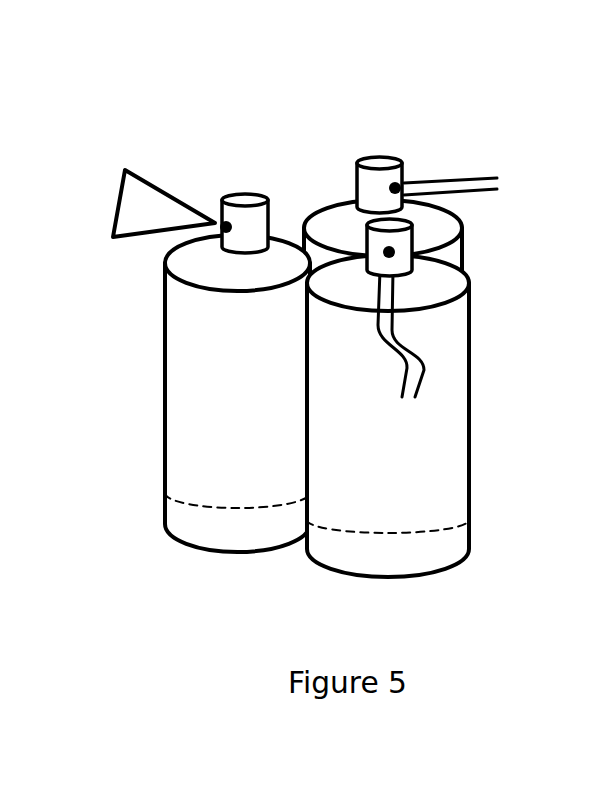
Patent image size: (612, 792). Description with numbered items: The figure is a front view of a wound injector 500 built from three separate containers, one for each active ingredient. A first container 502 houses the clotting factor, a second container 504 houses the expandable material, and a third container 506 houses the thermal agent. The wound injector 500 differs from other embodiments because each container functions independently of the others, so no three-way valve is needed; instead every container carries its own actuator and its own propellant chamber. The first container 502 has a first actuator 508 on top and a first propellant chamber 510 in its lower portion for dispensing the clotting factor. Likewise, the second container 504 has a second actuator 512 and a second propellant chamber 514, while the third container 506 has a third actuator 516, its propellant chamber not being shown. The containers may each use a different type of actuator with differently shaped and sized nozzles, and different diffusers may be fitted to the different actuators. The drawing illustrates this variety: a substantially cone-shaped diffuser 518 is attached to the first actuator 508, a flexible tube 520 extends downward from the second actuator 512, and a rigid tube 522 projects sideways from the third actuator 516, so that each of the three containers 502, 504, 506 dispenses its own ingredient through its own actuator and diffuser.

The wound injector 500 is at (98, 78).
The first container 502 is at (165, 370).
The second container 504 is at (468, 413).
The third container 506 is at (462, 232).
The first actuator 508 is at (247, 194).
The first propellant chamber 510 is at (183, 521).
The second actuator 512 is at (395, 260).
The second propellant chamber 514 is at (457, 543).
The third actuator 516 is at (393, 157).
The cone-shaped diffuser 518 is at (115, 222).
The flexible tube 520 is at (423, 360).
The rigid tube 522 is at (478, 178).